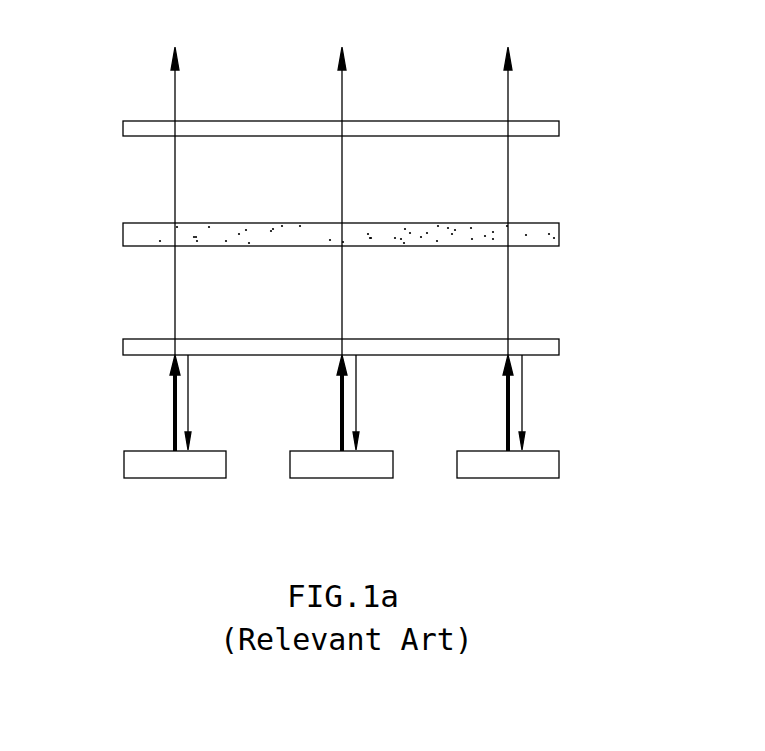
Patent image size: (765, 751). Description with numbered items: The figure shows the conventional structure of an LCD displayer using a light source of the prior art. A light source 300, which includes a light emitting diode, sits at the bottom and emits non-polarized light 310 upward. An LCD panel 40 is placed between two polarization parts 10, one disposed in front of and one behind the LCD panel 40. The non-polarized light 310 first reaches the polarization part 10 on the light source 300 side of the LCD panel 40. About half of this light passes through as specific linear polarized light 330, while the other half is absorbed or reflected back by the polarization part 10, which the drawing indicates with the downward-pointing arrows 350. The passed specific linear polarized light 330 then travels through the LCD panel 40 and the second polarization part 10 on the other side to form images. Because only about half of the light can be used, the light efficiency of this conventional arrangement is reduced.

The polarization part 10 is at (560, 128).
The LCD panel 40 is at (560, 233).
The light source 300 is at (140, 478).
The non-polarized light 310 is at (172, 390).
The specific linear polarized light 330 is at (173, 100).
The light reflected back toward light source 350 is at (188, 382).